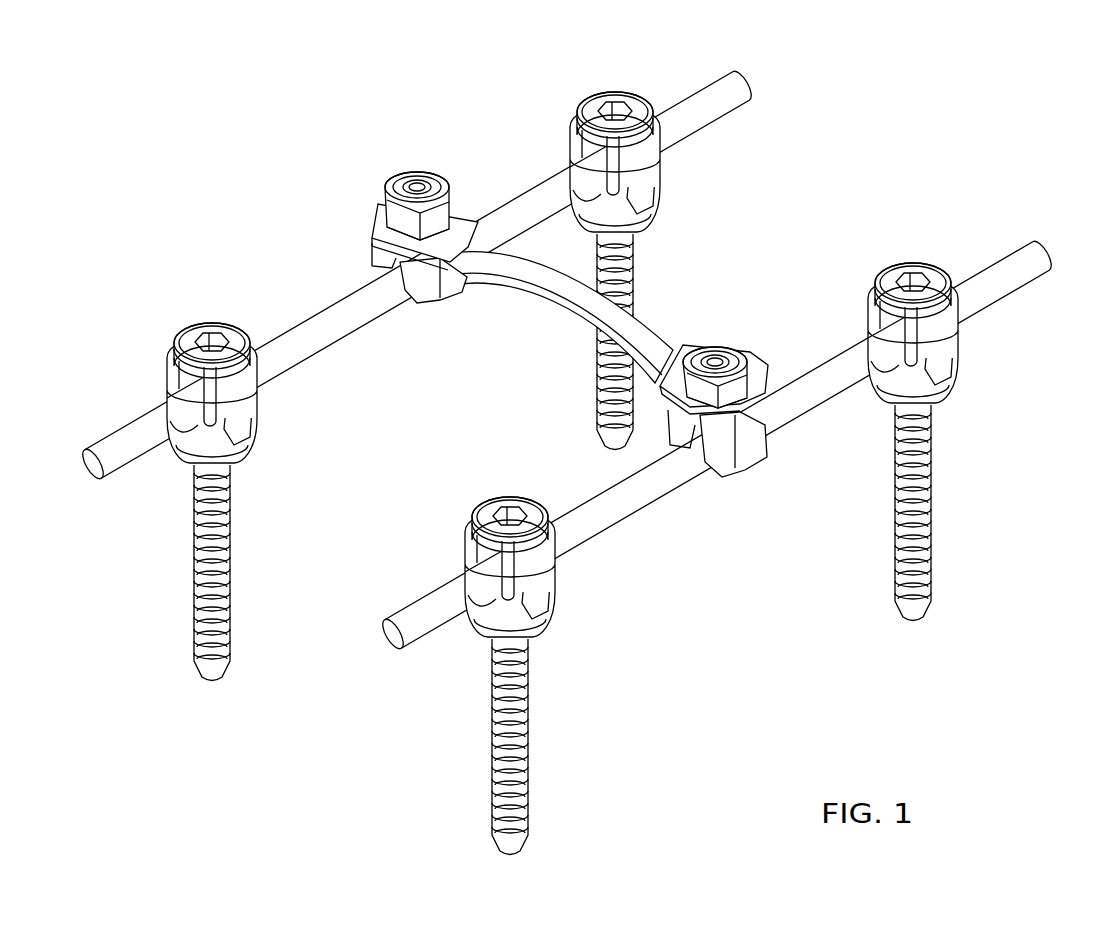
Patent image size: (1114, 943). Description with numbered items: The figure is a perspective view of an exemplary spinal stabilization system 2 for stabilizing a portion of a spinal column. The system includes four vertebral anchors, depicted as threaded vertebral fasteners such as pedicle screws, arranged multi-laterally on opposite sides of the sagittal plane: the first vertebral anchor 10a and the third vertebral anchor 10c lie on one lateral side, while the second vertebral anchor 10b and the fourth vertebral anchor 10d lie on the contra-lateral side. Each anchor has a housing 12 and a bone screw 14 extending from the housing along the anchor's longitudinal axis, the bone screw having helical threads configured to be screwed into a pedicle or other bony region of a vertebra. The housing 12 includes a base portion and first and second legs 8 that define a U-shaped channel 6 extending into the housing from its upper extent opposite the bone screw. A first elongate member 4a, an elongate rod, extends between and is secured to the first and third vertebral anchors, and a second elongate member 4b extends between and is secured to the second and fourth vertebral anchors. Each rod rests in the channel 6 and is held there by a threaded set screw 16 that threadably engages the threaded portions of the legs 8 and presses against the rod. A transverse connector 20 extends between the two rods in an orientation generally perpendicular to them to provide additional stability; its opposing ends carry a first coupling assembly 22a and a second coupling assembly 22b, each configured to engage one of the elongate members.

The spinal stabilization system 2 is at (577, 456).
The first elongate member 4a is at (660, 500).
The second elongate member 4b is at (330, 310).
The channel 6 is at (146, 409).
The first and second legs 8 is at (217, 381).
The first vertebral anchor 10a is at (532, 659).
The second vertebral anchor 10b is at (234, 485).
The third vertebral anchor 10c is at (935, 425).
The fourth vertebral anchor 10d is at (637, 254).
The housing 12 is at (244, 432).
The bone screw 14 is at (246, 573).
The threaded set screw 16 is at (189, 333).
The transverse connector 20 is at (520, 322).
The first coupling assembly 22a is at (380, 158).
The second coupling assembly 22b is at (728, 328).